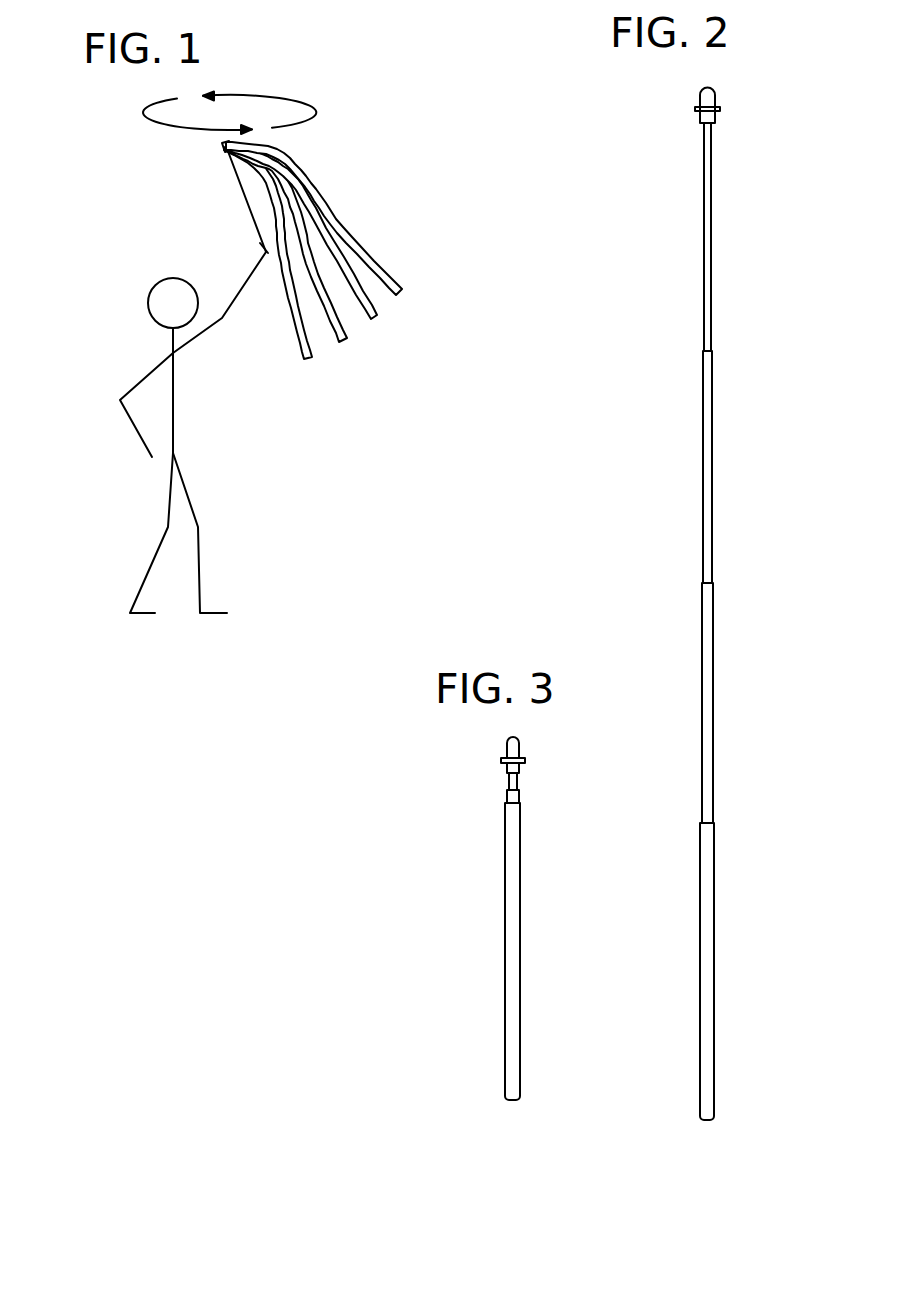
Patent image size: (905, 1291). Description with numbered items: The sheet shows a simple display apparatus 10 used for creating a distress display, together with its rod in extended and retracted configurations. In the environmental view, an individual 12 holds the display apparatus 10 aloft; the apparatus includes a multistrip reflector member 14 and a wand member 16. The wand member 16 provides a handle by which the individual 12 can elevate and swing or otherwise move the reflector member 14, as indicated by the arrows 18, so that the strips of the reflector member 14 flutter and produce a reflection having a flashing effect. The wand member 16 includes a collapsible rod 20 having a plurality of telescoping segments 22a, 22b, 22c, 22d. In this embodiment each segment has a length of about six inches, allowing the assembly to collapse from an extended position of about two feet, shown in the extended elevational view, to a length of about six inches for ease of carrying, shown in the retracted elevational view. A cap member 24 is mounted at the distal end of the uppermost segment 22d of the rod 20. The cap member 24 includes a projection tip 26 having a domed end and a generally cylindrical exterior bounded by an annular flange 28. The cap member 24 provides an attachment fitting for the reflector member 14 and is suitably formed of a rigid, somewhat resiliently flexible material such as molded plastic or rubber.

In FIG. 1, the display apparatus 10 is at (314, 245).
In FIG. 1, the individual 12 is at (93, 443).
In FIG. 1, the multistrip reflector member 14 is at (362, 232).
In FIG. 1, the wand member 16 is at (232, 197).
In FIG. 2, the wand member 16 is at (681, 595).
In FIG. 3, the wand member 16 is at (478, 911).
In FIG. 1, the arrows 18 is at (280, 98).
In FIG. 2, the collapsible rod 20 is at (712, 595).
In FIG. 3, the collapsible rod 20 is at (511, 911).
In FIG. 2, the telescoping segment 22a is at (698, 934).
In FIG. 3, the telescoping segment 22a is at (519, 1010).
In FIG. 2, the telescoping segment 22b is at (715, 755).
In FIG. 2, the telescoping segment 22c is at (714, 463).
In FIG. 2, the telescoping segment 22d is at (705, 280).
In FIG. 2, the cap member 24 is at (689, 118).
In FIG. 3, the cap member 24 is at (494, 773).
In FIG. 2, the projection tip 26 is at (701, 90).
In FIG. 3, the projection tip 26 is at (520, 738).
In FIG. 2, the annular flange 28 is at (720, 107).
In FIG. 3, the annular flange 28 is at (503, 760).